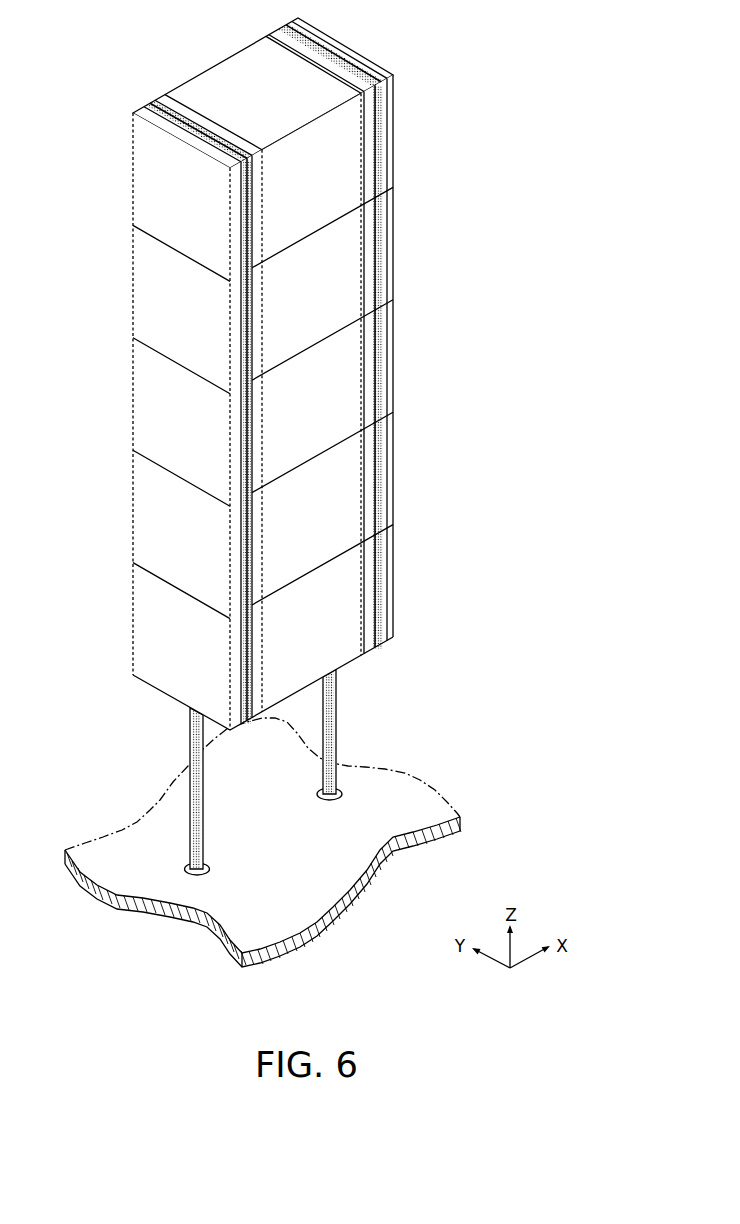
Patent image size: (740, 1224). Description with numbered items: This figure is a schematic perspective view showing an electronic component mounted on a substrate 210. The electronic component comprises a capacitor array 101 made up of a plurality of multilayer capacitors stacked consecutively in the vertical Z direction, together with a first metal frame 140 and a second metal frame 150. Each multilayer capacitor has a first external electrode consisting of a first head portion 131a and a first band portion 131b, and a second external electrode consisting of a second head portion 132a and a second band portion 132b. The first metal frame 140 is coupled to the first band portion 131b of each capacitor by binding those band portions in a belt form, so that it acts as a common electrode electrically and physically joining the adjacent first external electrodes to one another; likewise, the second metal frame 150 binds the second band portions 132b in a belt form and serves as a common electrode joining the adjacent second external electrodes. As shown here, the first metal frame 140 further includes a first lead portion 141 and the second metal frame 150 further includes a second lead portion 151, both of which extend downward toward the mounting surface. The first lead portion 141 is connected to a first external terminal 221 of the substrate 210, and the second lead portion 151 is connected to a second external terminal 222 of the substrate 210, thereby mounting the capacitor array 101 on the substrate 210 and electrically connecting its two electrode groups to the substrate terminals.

The capacitor array 101 is at (206, 68).
The first head portion 131a is at (168, 153).
The first band portion 131b is at (235, 222).
The second head portion 132a is at (395, 96).
The second band portion 132b is at (388, 128).
The first metal frame 140 is at (247, 322).
The first lead portion 141 is at (190, 747).
The second metal frame 150 is at (385, 245).
The second lead portion 151 is at (337, 720).
The substrate 210 is at (440, 796).
The first external terminal 221 is at (187, 870).
The second external terminal 222 is at (340, 795).